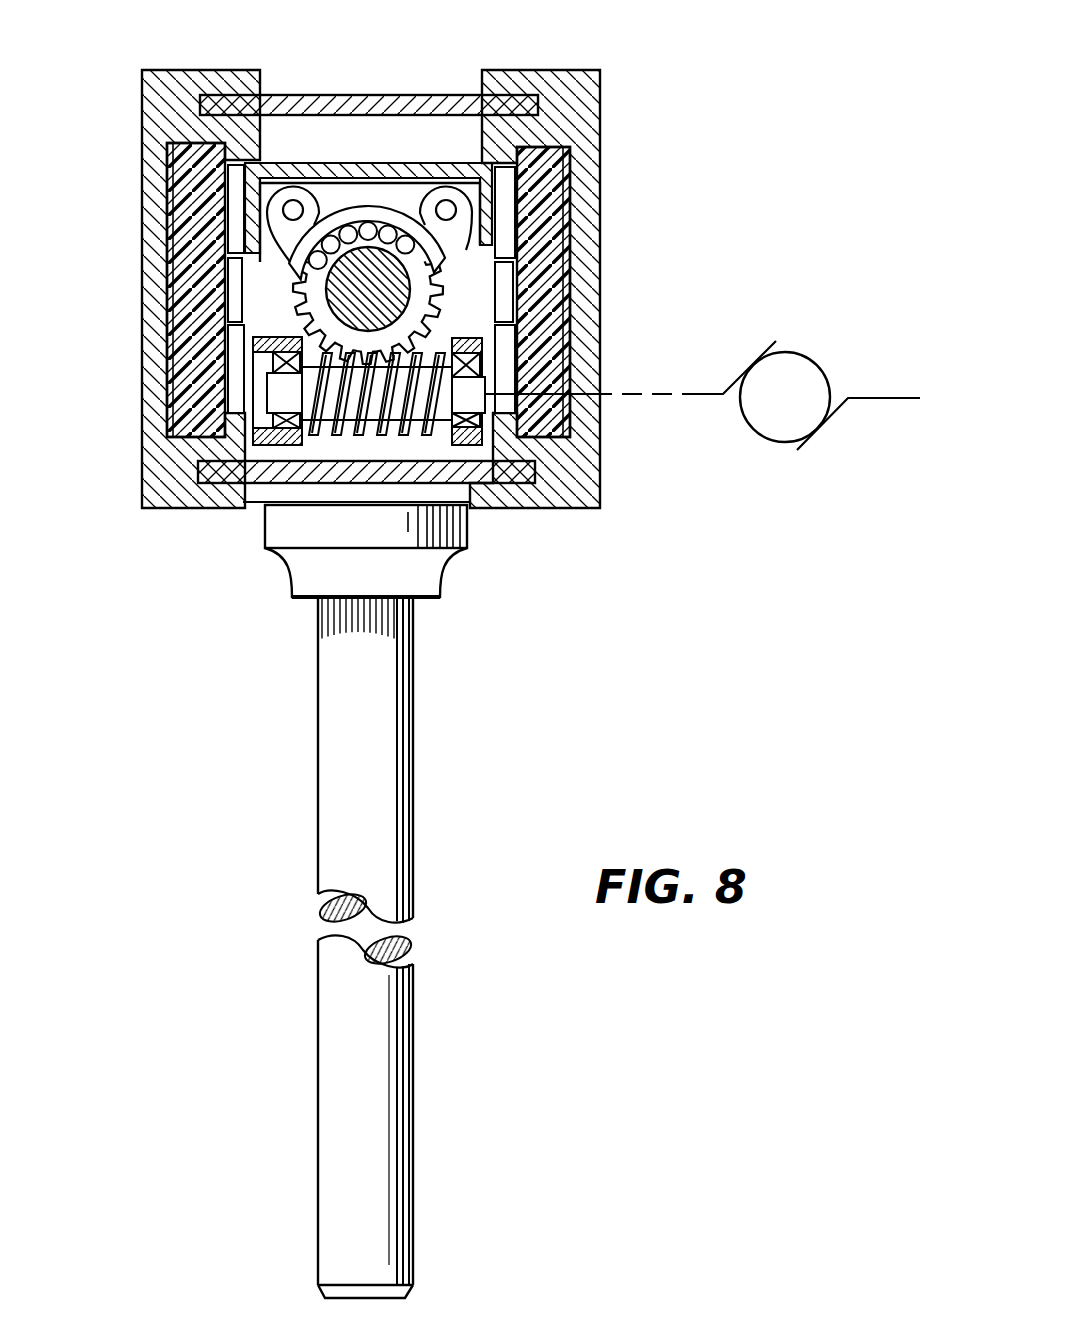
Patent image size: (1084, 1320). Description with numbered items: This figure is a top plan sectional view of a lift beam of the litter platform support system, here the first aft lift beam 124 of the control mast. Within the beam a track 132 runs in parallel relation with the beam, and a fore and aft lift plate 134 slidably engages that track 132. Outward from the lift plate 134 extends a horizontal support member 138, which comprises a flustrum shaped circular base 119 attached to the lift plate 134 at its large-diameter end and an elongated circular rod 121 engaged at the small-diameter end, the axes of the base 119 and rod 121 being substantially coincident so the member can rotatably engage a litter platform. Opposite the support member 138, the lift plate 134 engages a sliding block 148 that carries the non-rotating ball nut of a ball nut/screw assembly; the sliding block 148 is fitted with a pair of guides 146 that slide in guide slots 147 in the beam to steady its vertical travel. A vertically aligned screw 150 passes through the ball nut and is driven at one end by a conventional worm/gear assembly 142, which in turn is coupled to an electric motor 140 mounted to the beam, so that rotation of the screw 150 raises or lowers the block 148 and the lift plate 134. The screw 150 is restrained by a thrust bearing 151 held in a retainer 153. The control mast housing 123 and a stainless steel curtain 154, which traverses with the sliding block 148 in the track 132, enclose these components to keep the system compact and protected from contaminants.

The flustrum shaped circular base 119 is at (445, 567).
The elongated circular rod 121 is at (413, 687).
The control mast housing 123 is at (602, 96).
The first aft lift beam 124 is at (217, 70).
The track 132 is at (218, 508).
The fore and aft lift plates 134 is at (260, 507).
The horizontal support member 138 is at (413, 870).
The electric motor 140 is at (806, 356).
The worm/gear assembly 142 is at (440, 308).
The guides 146 is at (196, 205).
The guide slots 147 is at (186, 421).
The sliding block 148 is at (265, 293).
The screw 150 is at (406, 291).
The thrust bearing 151 is at (368, 222).
The retainer 153 is at (310, 206).
The stainless steel curtain 154 is at (385, 95).